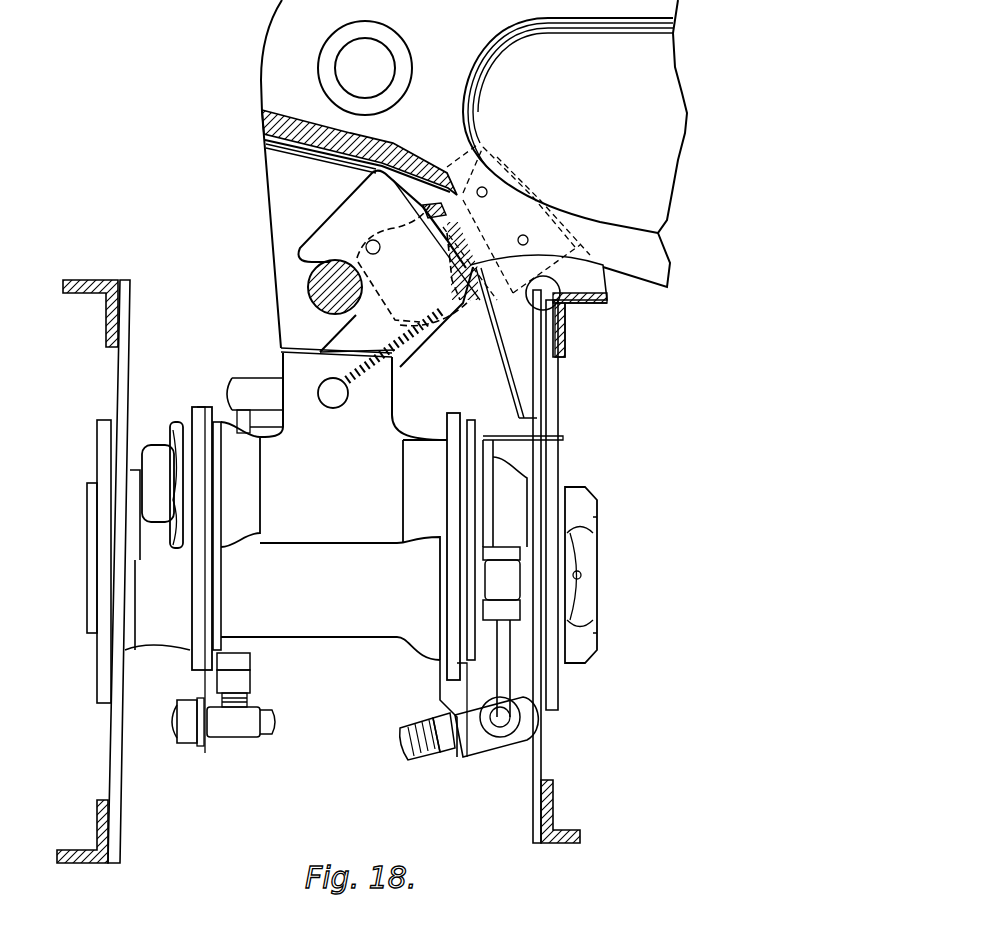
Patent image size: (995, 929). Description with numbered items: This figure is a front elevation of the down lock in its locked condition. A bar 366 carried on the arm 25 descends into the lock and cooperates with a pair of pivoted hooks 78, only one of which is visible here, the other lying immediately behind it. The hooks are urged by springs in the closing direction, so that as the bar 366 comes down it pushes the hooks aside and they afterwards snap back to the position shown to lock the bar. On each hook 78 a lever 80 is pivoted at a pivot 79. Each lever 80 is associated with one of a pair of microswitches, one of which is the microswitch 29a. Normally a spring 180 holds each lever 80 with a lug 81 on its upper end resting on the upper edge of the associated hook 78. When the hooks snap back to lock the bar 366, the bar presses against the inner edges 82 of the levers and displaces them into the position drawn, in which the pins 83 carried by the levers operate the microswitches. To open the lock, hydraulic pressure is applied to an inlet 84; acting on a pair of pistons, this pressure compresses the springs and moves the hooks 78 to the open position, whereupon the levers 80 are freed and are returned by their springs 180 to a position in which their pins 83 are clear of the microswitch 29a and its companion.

The arm 25 is at (262, 30).
The pivoted hook 78 is at (300, 244).
The pivot 79 is at (368, 241).
The lug 81 is at (430, 203).
The inner edge 82 is at (362, 278).
The bar 366 is at (320, 298).
The lever 80 is at (357, 340).
The pin 83 is at (443, 322).
The spring 180 is at (407, 370).
The microswitch 29a is at (480, 312).
The inlet 84 is at (400, 748).